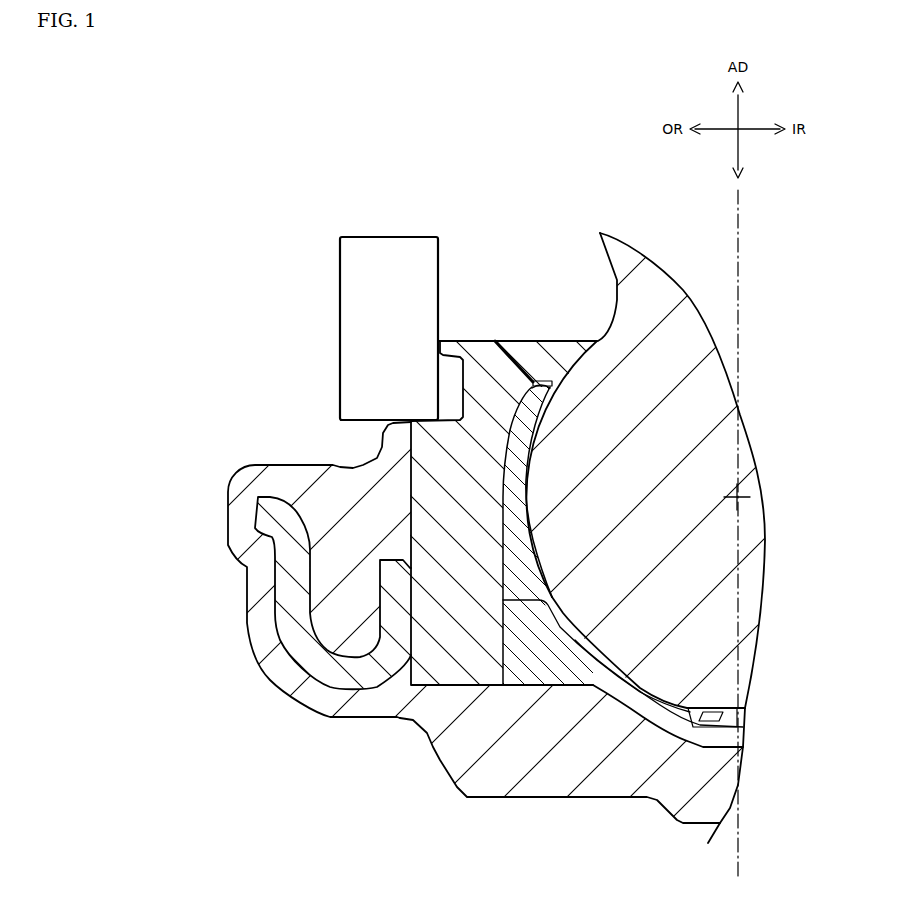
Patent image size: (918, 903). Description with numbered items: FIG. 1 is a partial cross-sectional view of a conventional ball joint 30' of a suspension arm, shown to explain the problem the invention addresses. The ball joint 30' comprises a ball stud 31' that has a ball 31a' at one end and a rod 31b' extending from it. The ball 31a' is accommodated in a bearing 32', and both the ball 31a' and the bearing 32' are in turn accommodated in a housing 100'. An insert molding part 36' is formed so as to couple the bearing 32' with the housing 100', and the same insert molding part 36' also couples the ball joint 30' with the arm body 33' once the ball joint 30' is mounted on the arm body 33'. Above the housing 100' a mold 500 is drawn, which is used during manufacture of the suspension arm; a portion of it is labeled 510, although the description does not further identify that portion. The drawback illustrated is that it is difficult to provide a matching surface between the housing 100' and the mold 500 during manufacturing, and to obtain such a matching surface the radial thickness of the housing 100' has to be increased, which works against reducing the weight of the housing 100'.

The ball joint 30' is at (459, 451).
The ball stud 31' is at (459, 451).
The ball 31a' is at (713, 470).
The rod 31b' is at (660, 285).
The bearing 32' is at (705, 798).
The arm body 33' is at (459, 451).
The insert molding part 36' is at (563, 451).
The housing 100' is at (459, 451).
The mold 500 is at (380, 245).
The pressing surface of jig 510 is at (355, 422).